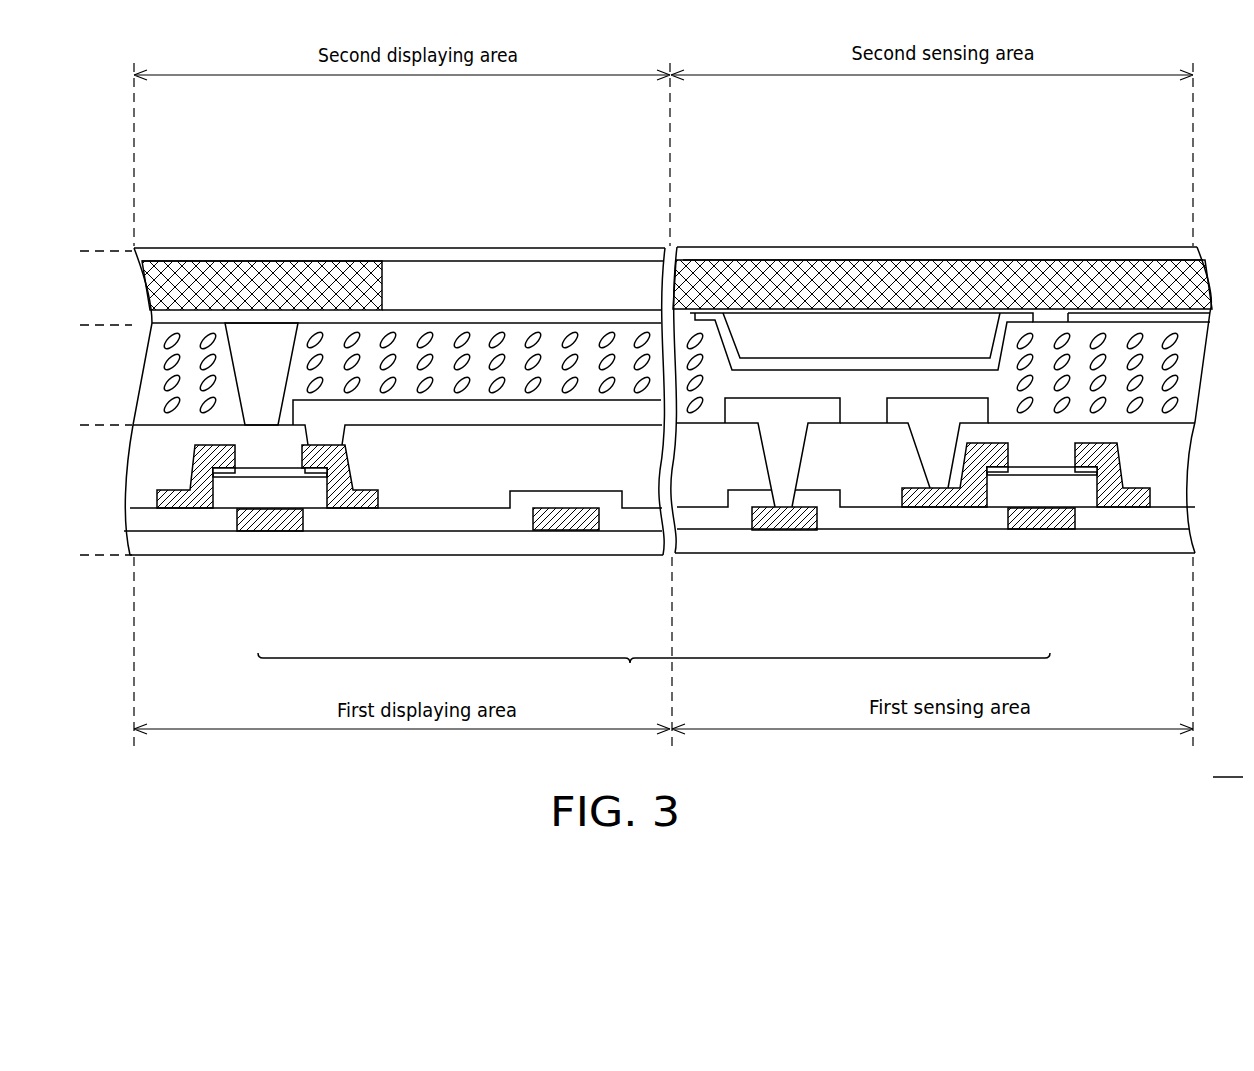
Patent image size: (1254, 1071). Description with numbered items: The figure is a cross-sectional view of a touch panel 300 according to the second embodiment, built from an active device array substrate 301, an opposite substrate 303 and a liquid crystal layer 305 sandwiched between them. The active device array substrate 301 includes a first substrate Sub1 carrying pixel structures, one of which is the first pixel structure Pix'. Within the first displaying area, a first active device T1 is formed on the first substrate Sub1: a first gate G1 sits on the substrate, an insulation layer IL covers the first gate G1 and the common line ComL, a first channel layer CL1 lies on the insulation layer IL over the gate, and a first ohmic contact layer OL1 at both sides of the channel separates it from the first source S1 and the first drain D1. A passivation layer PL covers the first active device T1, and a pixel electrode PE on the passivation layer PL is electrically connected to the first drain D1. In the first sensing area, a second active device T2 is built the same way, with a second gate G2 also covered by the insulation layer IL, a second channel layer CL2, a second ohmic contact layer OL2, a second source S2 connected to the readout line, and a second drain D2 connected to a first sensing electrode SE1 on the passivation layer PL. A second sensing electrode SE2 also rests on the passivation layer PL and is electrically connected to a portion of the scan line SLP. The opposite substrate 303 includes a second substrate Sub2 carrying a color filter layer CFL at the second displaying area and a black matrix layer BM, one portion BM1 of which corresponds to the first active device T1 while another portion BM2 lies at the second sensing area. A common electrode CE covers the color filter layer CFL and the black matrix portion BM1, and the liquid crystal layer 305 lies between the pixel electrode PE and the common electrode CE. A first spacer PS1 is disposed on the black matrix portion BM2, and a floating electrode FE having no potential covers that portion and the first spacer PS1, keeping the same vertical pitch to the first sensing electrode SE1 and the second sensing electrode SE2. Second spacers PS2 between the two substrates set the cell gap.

The touch panel 300 is at (1228, 762).
The active device array substrate 301 is at (80, 425).
The opposite substrate 303 is at (80, 251).
The liquid crystal layer 305 is at (80, 325).
The first substrate Sub1 is at (147, 555).
The second substrate Sub2 is at (180, 248).
The first spacer PS1 is at (834, 323).
The second spacer PS2 is at (240, 343).
The black matrix layer BM is at (677, 198).
The portion of the black matrix layer BM1 is at (352, 272).
The portion of the black matrix layer BM2 is at (742, 275).
The color filter layer CFL is at (493, 270).
The common electrode CE is at (582, 318).
The floating electrode FE is at (943, 363).
The first active device T1 is at (276, 549).
The first source S1 is at (180, 510).
The first drain D1 is at (338, 508).
The first gate G1 is at (270, 525).
The first channel layer CL1 is at (267, 481).
The first ohmic contact layer OL1 is at (227, 470).
The insulation layer IL is at (387, 522).
The pixel electrode PE is at (433, 408).
The passivation layer PL is at (477, 476).
The common line ComL is at (568, 531).
The first pixel structure Pix' is at (654, 675).
The first sensing electrode SE1 is at (900, 413).
The second sensing electrode SE2 is at (740, 413).
The portion of the scan line SLP is at (807, 505).
The second active device T2 is at (1026, 548).
The second source S2 is at (1120, 500).
The second drain D2 is at (943, 500).
The second gate G2 is at (1041, 557).
The second channel layer CL2 is at (1040, 478).
The second ohmic contact layer OL2 is at (998, 468).